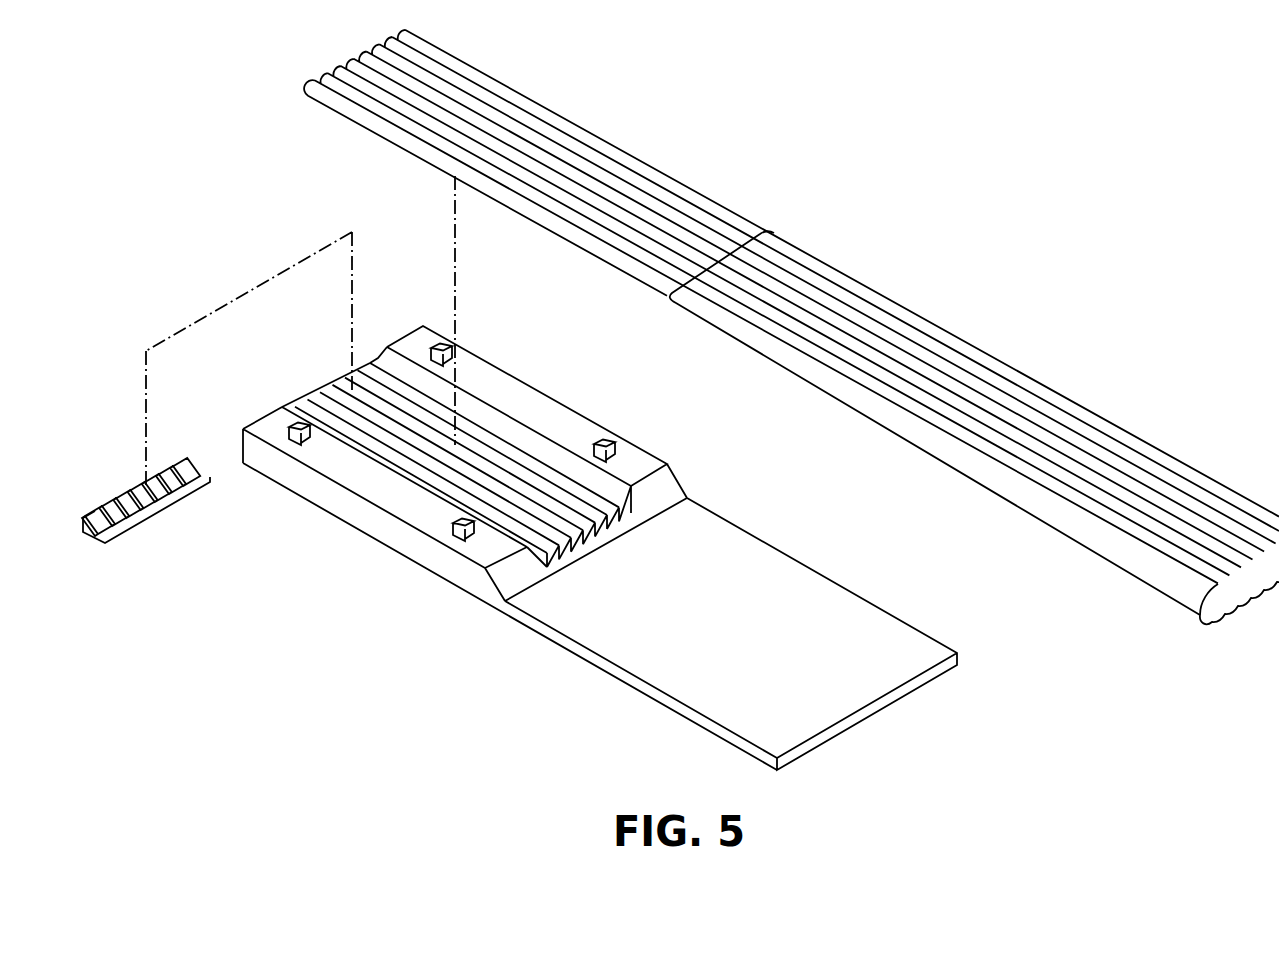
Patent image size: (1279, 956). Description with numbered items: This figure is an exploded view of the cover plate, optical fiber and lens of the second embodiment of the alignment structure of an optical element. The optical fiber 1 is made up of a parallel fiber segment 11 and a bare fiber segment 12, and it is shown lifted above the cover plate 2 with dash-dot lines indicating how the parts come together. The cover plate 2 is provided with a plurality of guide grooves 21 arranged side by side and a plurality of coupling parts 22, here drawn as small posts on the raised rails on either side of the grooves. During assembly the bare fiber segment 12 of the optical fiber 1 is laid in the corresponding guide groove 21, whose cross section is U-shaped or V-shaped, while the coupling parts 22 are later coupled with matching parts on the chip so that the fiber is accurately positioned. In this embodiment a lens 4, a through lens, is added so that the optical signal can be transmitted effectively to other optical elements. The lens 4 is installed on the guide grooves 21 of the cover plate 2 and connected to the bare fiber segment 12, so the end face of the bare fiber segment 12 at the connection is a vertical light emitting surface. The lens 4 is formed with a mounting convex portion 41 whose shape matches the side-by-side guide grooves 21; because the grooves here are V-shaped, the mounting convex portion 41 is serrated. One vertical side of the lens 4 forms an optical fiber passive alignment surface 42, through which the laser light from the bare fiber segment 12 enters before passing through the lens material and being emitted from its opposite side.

The optical fiber 1 is at (791, 327).
The parallel fiber segment 11 is at (974, 398).
The bare fiber segment 12 is at (718, 218).
The cover plate 2 is at (590, 510).
The guide groove 21 is at (506, 460).
The coupling part 22 is at (441, 342).
The lens 4 is at (126, 516).
The mounting convex portion 41 is at (107, 510).
The optical fiber passive alignment surface 42 is at (130, 530).